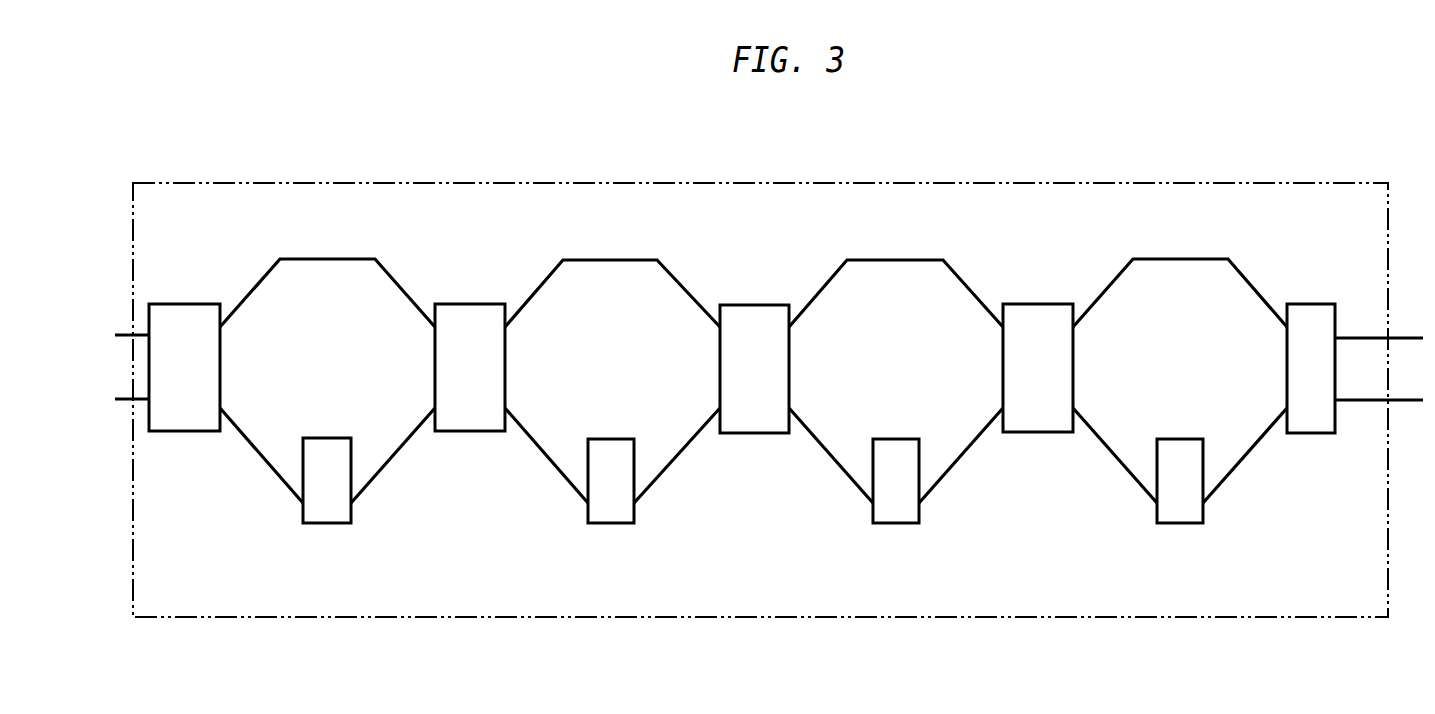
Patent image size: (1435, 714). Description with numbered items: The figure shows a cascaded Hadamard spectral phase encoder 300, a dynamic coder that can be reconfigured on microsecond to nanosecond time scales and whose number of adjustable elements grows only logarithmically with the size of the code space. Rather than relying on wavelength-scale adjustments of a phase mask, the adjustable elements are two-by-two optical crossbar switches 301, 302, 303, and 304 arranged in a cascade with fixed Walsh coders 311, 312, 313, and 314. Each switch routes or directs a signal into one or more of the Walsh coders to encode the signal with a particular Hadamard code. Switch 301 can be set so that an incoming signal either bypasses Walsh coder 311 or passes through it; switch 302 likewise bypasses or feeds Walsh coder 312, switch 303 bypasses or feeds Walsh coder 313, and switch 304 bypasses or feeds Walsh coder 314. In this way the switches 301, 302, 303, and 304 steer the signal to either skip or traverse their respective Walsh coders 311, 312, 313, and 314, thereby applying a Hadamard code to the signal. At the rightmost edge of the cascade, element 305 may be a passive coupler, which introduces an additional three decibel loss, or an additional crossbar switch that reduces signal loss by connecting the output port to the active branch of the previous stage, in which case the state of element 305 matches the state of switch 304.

The encoder 300 is at (372, 183).
The switch 301 is at (208, 304).
The switch 302 is at (496, 304).
The switch 303 is at (783, 305).
The switch 304 is at (1060, 304).
The passive coupler or crossbar switch 305 is at (1325, 304).
The Walsh coder 311 is at (330, 438).
The Walsh coder 312 is at (625, 439).
The Walsh coder 313 is at (905, 439).
The Walsh coder 314 is at (1195, 439).